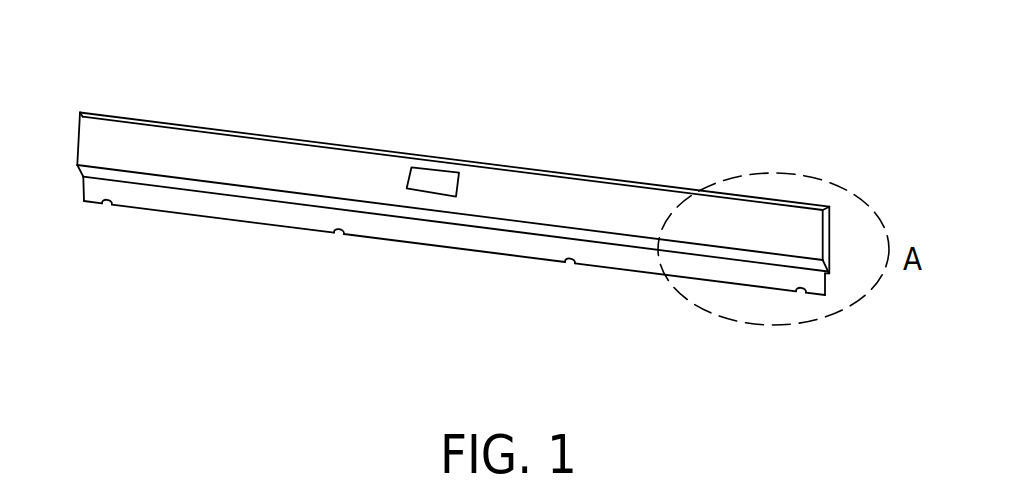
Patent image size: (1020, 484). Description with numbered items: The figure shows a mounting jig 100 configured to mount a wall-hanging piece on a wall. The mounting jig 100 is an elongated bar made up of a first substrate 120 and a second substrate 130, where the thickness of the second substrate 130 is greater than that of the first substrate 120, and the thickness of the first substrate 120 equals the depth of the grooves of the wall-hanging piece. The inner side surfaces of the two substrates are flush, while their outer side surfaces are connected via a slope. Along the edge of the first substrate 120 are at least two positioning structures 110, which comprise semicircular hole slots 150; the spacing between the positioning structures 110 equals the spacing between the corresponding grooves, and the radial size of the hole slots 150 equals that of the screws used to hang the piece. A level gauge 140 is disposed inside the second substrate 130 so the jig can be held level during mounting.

The mounting jig 100 is at (283, 127).
The positioning structures 110 is at (800, 285).
The first substrate 120 is at (737, 273).
The second substrate 130 is at (750, 223).
The level gauge 140 is at (433, 183).
The hole slots 150 is at (800, 285).